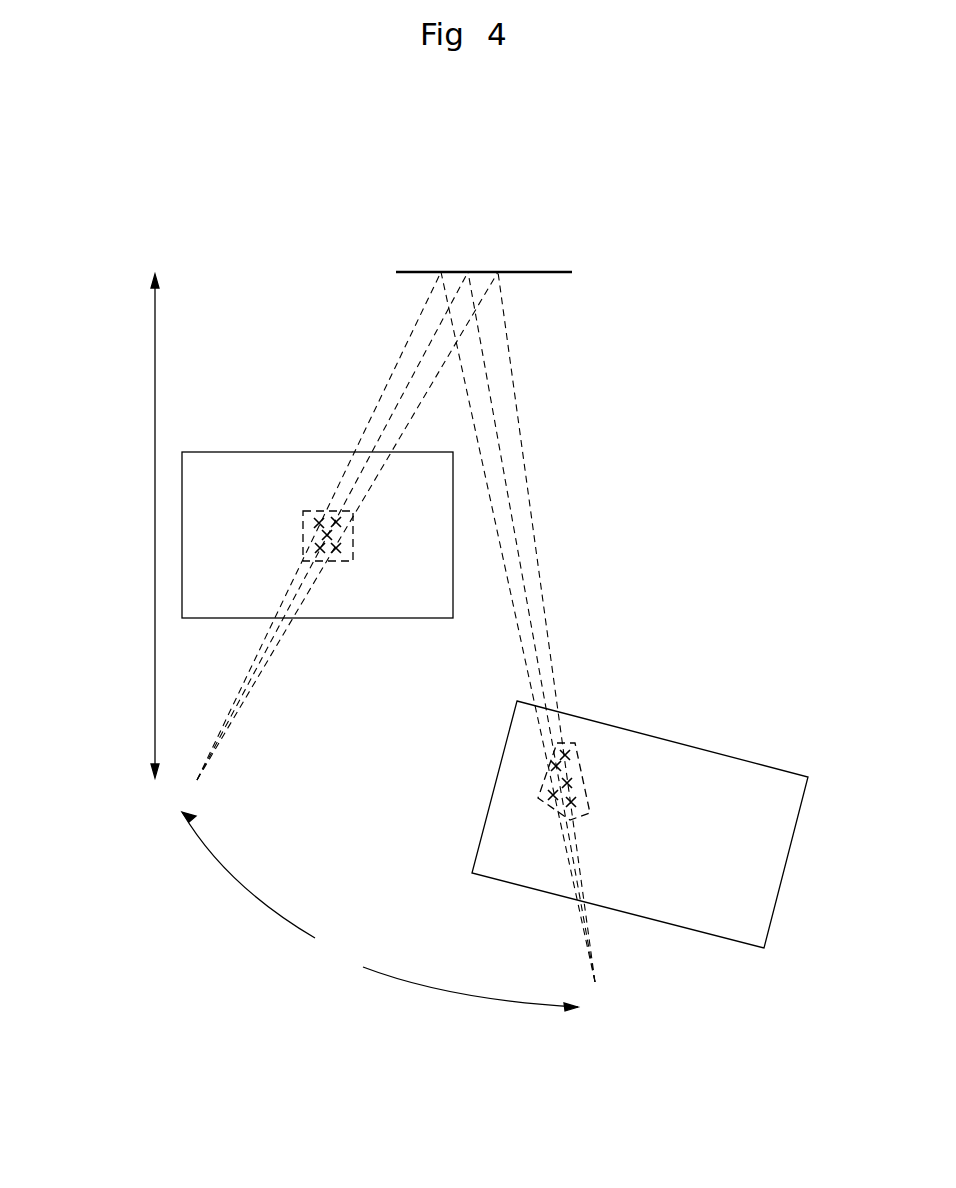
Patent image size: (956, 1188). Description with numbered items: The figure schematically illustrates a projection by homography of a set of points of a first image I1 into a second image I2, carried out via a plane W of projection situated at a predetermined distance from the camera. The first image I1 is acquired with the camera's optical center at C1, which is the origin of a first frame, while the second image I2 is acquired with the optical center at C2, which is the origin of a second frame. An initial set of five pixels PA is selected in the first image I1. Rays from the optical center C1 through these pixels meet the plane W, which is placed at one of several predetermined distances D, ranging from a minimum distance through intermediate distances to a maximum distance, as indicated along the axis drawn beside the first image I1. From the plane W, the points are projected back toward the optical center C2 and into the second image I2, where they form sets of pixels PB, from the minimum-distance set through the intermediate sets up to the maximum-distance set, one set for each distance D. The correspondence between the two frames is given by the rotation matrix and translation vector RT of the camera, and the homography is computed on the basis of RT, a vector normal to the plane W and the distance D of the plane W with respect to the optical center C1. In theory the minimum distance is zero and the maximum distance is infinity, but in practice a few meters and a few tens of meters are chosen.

The plane of projection W is at (484, 262).
The first image I1 is at (247, 451).
The second image I2 is at (773, 762).
The initial set of pixels PA is at (318, 503).
The projected sets of pixels PB is at (587, 737).
The optical center of the camera for the first image C1 is at (173, 797).
The optical center of the camera for the second image C2 is at (603, 1009).
The rotation matrix and translation vector RT is at (380, 911).
The predetermined distances of the plane of projection D is at (96, 526).